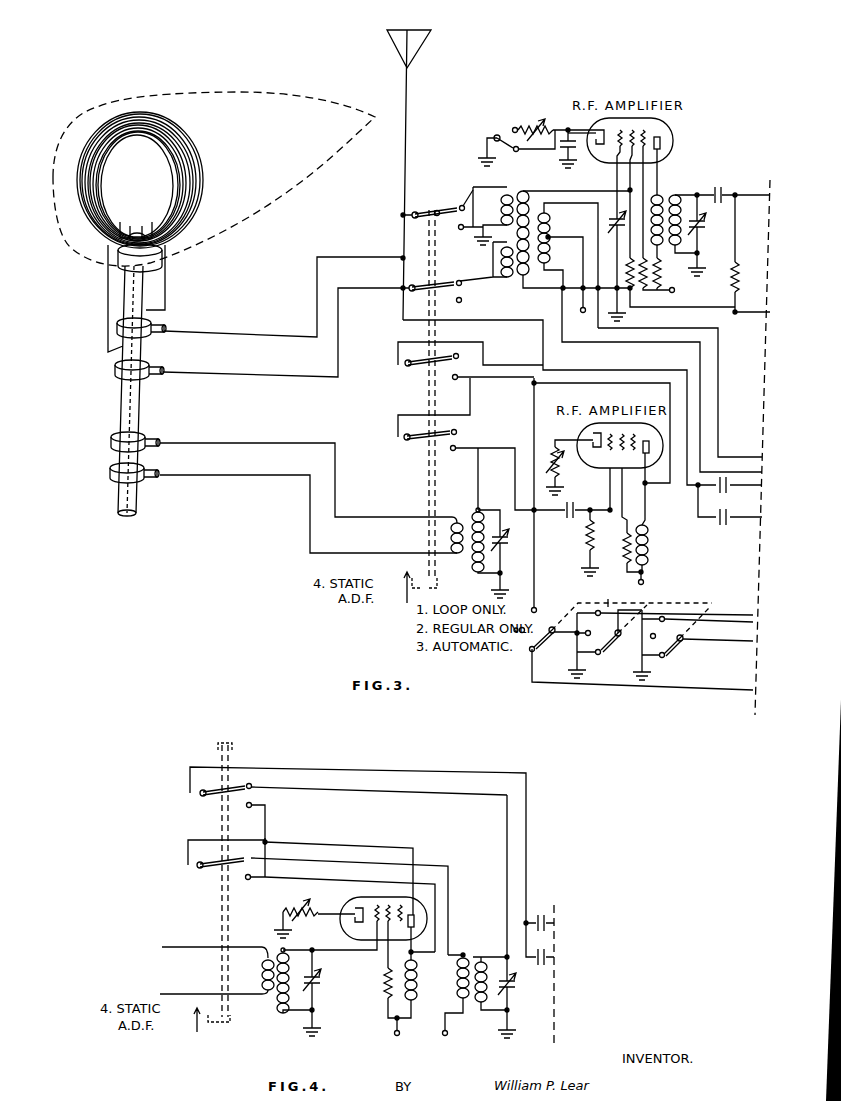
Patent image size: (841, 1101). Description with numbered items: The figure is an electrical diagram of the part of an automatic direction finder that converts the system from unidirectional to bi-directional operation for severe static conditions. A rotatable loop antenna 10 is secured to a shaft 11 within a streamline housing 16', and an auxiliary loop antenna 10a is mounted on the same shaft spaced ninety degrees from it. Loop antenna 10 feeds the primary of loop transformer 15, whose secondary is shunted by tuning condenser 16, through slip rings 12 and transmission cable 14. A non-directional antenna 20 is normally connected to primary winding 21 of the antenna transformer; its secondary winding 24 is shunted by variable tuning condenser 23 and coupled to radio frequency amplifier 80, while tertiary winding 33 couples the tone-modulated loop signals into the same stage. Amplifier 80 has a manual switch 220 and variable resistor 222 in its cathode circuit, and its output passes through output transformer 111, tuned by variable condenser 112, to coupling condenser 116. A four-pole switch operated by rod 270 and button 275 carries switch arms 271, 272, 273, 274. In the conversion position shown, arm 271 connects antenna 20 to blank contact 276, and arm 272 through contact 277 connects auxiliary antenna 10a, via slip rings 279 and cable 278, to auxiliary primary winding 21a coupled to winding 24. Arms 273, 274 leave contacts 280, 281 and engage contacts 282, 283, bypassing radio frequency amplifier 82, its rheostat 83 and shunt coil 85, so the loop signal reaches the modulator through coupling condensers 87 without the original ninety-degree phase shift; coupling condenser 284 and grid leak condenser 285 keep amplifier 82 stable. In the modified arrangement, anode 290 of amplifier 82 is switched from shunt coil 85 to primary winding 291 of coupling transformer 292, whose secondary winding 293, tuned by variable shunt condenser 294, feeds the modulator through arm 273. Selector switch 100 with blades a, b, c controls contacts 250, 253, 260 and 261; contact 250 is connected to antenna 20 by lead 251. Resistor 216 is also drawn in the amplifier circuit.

In FIG. 3, the rotatable loop antenna 10 is at (107, 172).
In FIG. 3, the auxiliary loop antenna 10a is at (203, 186).
In FIG. 3, the shaft 11 is at (121, 400).
In FIG. 3, the slip rings 12 is at (145, 447).
In FIG. 3, the transmission cable 14 is at (170, 475).
In FIG. 4, the transmission cable 14 is at (185, 952).
In FIG. 3, the loop transformer 15 is at (457, 558).
In FIG. 4, the loop transformer 15 is at (270, 1000).
In FIG. 3, the tuning condenser 16 is at (499, 523).
In FIG. 4, the tuning condenser 16 is at (311, 992).
In FIG. 3, the streamline housing 16' is at (214, 179).
In FIG. 3, the non-directional antenna 20 is at (412, 48).
In FIG. 3, the primary winding 21 is at (502, 205).
In FIG. 3, the auxiliary primary winding 21a is at (486, 261).
In FIG. 3, the variable tuning condenser 23 is at (614, 218).
In FIG. 3, the secondary winding 24 is at (530, 204).
In FIG. 3, the tertiary winding 33 is at (551, 232).
In FIG. 3, the radio frequency pentode amplifier 80 is at (674, 132).
In FIG. 3, the radio frequency amplifier pentode 82 is at (581, 428).
In FIG. 4, the radio frequency amplifier pentode 82 is at (342, 932).
In FIG. 3, the rheostat 83 is at (560, 470).
In FIG. 4, the rheostat 83 is at (314, 911).
In FIG. 3, the shunt radio frequency choke coil 85 is at (650, 550).
In FIG. 4, the shunt radio frequency choke coil 85 is at (419, 982).
In FIG. 3, the coupling condensers 87 is at (728, 488).
In FIG. 4, the coupling condensers 87 is at (538, 917).
In FIG. 3, the selector switch 100 is at (726, 680).
In FIG. 3, the output radio frequency transformer 111 is at (663, 197).
In FIG. 3, the variable condenser 112 is at (702, 231).
In FIG. 3, the coupling condenser 116 is at (723, 192).
In FIG. 3, the resistor 216 is at (733, 290).
In FIG. 3, the manual switch 220 is at (497, 135).
In FIG. 3, the variable resistor 222 is at (550, 116).
In FIG. 3, the contact 250 is at (550, 495).
In FIG. 3, the lead 251 is at (637, 291).
In FIG. 3, the contact 253 is at (537, 650).
In FIG. 3, the contact 260 is at (632, 611).
In FIG. 3, the contact 261 is at (665, 629).
In FIG. 3, the switch rod 270 is at (424, 476).
In FIG. 4, the switch rod 270 is at (230, 925).
In FIG. 3, the switch arm 271 is at (447, 210).
In FIG. 3, the switch arm 272 is at (449, 283).
In FIG. 3, the switch arm 273 is at (406, 369).
In FIG. 4, the switch arm 273 is at (203, 797).
In FIG. 3, the switch arm 274 is at (406, 442).
In FIG. 4, the switch arm 274 is at (200, 869).
In FIG. 3, the button 275 is at (437, 590).
In FIG. 4, the button 275 is at (222, 1023).
In FIG. 3, the blank contact 276 is at (460, 204).
In FIG. 3, the contact 277 is at (463, 285).
In FIG. 3, the transmission cable 278 is at (192, 371).
In FIG. 3, the slip rings 279 is at (151, 336).
In FIG. 3, the contact 280 is at (452, 381).
In FIG. 4, the contact 280 is at (244, 816).
In FIG. 3, the contact 281 is at (452, 452).
In FIG. 4, the contact 281 is at (251, 882).
In FIG. 3, the contact 282 is at (459, 352).
In FIG. 4, the contact 282 is at (251, 789).
In FIG. 3, the contact 283 is at (454, 428).
In FIG. 4, the contact 283 is at (265, 842).
In FIG. 3, the coupling condenser 284 is at (578, 507).
In FIG. 3, the grid leak condenser 285 is at (585, 537).
In FIG. 4, the anode 290 is at (415, 920).
In FIG. 4, the primary winding 291 is at (455, 988).
In FIG. 4, the radio frequency coupling transformer 292 is at (467, 956).
In FIG. 4, the secondary winding 293 is at (505, 1010).
In FIG. 4, the variable shunt condenser 294 is at (511, 990).
In FIG. 3, the switch blade a is at (560, 645).
In FIG. 3, the switch blade b is at (621, 632).
In FIG. 3, the switch blade c is at (693, 645).